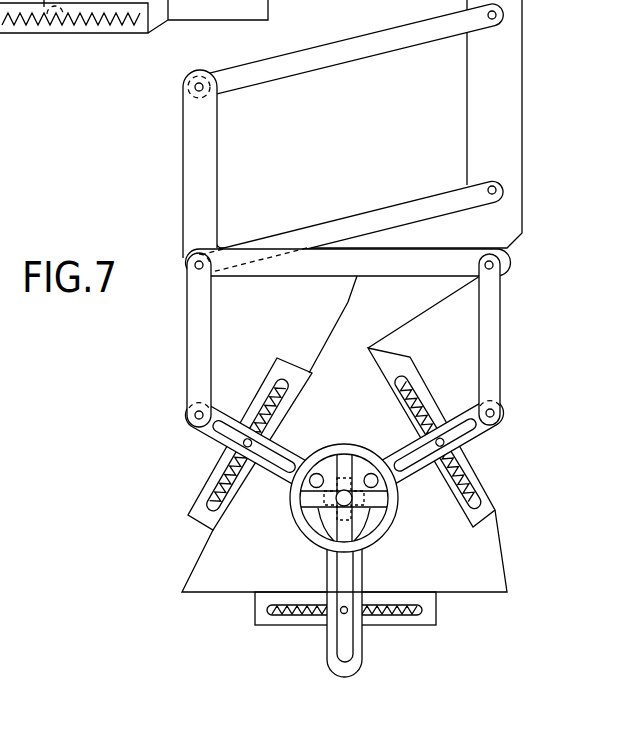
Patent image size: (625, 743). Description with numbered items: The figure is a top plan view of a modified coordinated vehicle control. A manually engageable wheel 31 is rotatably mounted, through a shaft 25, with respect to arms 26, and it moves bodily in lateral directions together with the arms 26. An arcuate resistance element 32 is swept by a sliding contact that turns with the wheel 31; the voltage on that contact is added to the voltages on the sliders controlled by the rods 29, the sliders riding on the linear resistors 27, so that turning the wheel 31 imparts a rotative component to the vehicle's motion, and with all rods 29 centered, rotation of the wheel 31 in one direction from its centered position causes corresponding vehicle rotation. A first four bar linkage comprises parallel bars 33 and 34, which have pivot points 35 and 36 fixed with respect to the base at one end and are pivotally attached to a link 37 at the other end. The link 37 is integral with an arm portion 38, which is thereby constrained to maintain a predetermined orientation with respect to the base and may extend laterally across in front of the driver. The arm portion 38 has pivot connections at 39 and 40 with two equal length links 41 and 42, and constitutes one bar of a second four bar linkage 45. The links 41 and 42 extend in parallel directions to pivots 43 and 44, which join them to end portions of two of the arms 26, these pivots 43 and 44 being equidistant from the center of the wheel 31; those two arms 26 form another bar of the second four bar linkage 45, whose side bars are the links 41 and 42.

The shaft 25 is at (361, 490).
The arms 26 is at (413, 474).
The linear resistors 27 is at (78, 31).
The rods 29 is at (348, 602).
The manually engageable wheel 31 is at (370, 445).
The arcuate resistance element 32 is at (333, 513).
The parallel bar 33 is at (359, 58).
The parallel bar 34 is at (365, 210).
The pivot point 35 is at (488, 26).
The pivot point 36 is at (487, 186).
The link 37 is at (218, 173).
The arm portion 38 is at (278, 277).
The pivot connection 39 is at (188, 272).
The pivot connection 40 is at (499, 265).
The link 41 is at (213, 343).
The link 42 is at (502, 343).
The pivot 43 is at (192, 420).
The pivot 44 is at (502, 415).
The second four bar linkage 45 is at (301, 349).